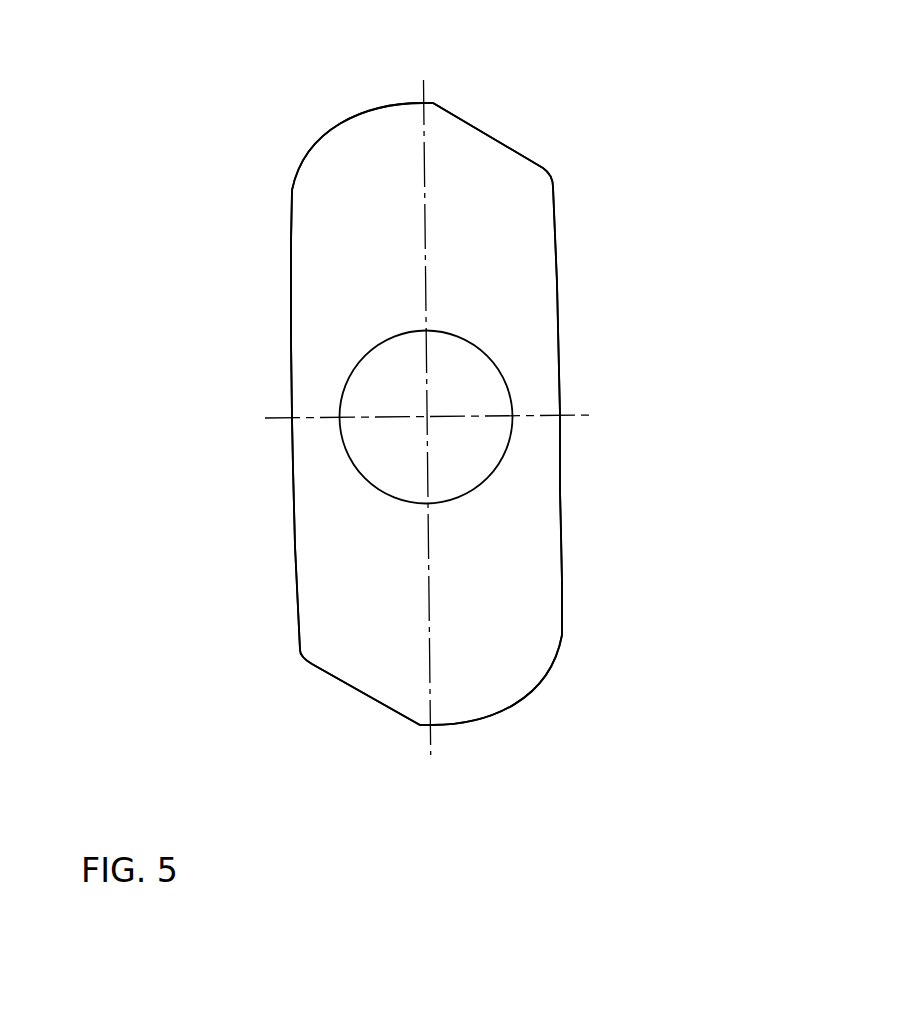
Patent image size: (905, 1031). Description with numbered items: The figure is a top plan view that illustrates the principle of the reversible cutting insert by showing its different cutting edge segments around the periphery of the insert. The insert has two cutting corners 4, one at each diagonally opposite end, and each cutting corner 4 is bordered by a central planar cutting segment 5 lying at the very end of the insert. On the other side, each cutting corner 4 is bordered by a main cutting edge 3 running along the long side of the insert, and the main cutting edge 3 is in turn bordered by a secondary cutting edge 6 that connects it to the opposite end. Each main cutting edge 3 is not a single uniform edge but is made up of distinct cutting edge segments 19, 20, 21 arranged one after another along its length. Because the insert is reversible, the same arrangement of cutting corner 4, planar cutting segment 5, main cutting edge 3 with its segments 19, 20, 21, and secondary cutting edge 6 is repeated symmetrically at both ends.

The main cutting edge 3 is at (563, 385).
The cutting corner 4 is at (326, 126).
The central planar cutting segment 5 is at (408, 100).
The secondary cutting edge 6 is at (489, 131).
The cutting edge segment 19 is at (286, 242).
The cutting edge segment 20 is at (286, 342).
The cutting edge segment 21 is at (293, 548).